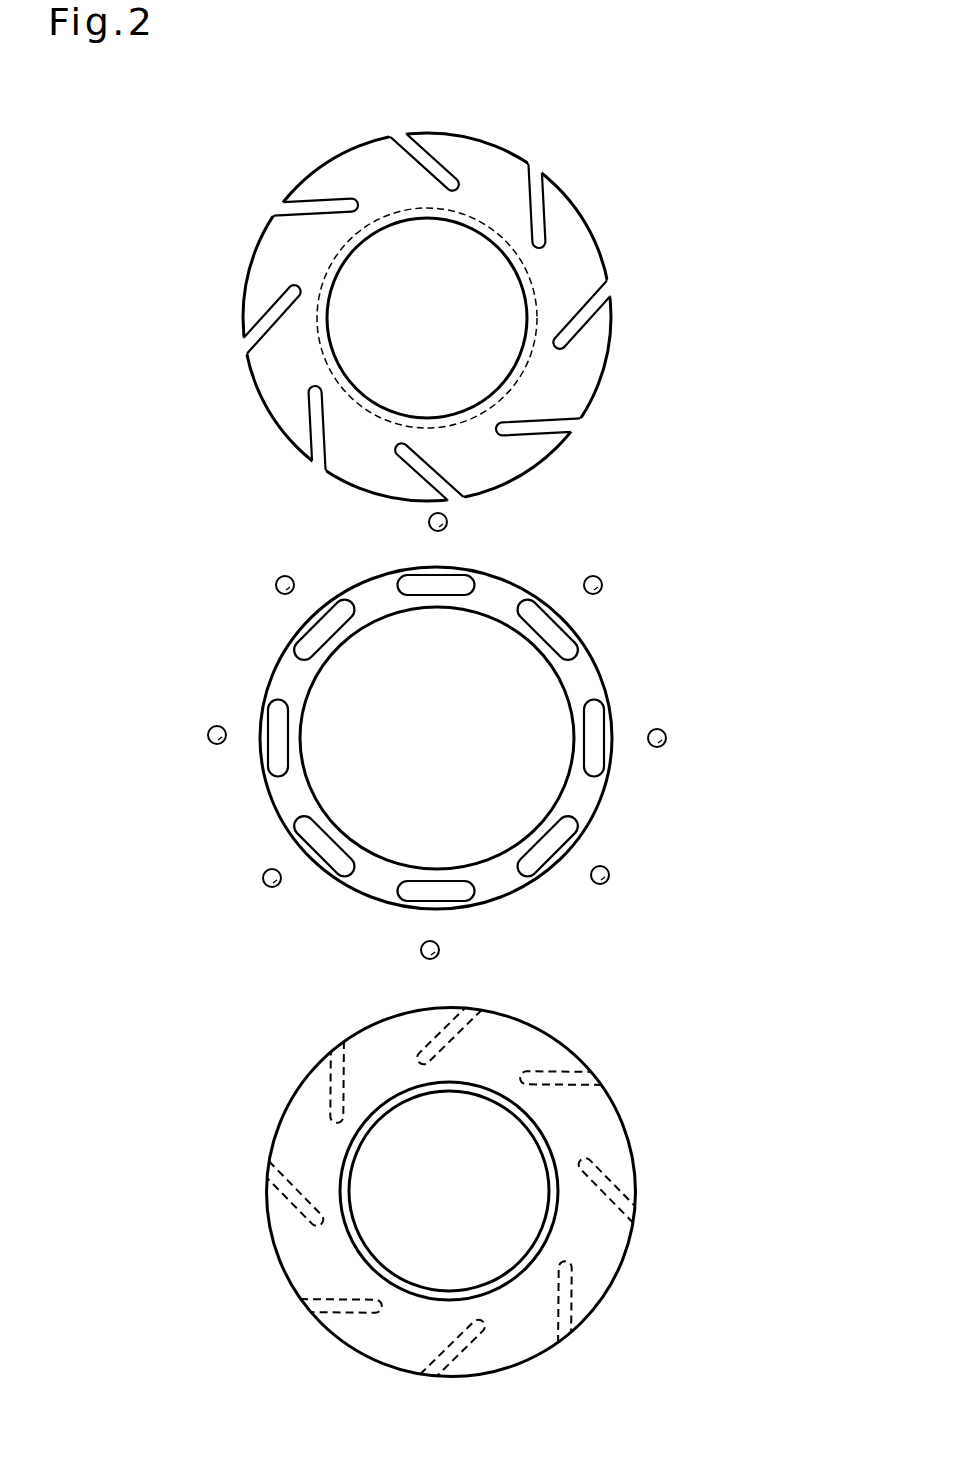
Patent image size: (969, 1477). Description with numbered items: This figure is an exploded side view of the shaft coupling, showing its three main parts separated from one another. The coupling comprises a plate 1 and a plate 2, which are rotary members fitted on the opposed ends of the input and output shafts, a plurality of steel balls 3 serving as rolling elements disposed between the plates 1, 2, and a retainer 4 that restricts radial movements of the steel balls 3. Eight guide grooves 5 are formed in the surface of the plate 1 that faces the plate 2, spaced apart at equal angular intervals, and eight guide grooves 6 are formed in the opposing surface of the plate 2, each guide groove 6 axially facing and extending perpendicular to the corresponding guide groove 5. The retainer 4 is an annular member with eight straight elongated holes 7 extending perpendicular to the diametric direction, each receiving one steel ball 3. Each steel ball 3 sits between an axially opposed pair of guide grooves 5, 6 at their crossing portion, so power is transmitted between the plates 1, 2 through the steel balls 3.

The plate 1 is at (460, 1192).
The plate 2 is at (430, 317).
The steel balls 3 is at (278, 590).
The retainer 4 is at (448, 736).
The guide grooves 5 is at (337, 1093).
The guide grooves 6 is at (303, 208).
The elongated holes 7 is at (282, 721).